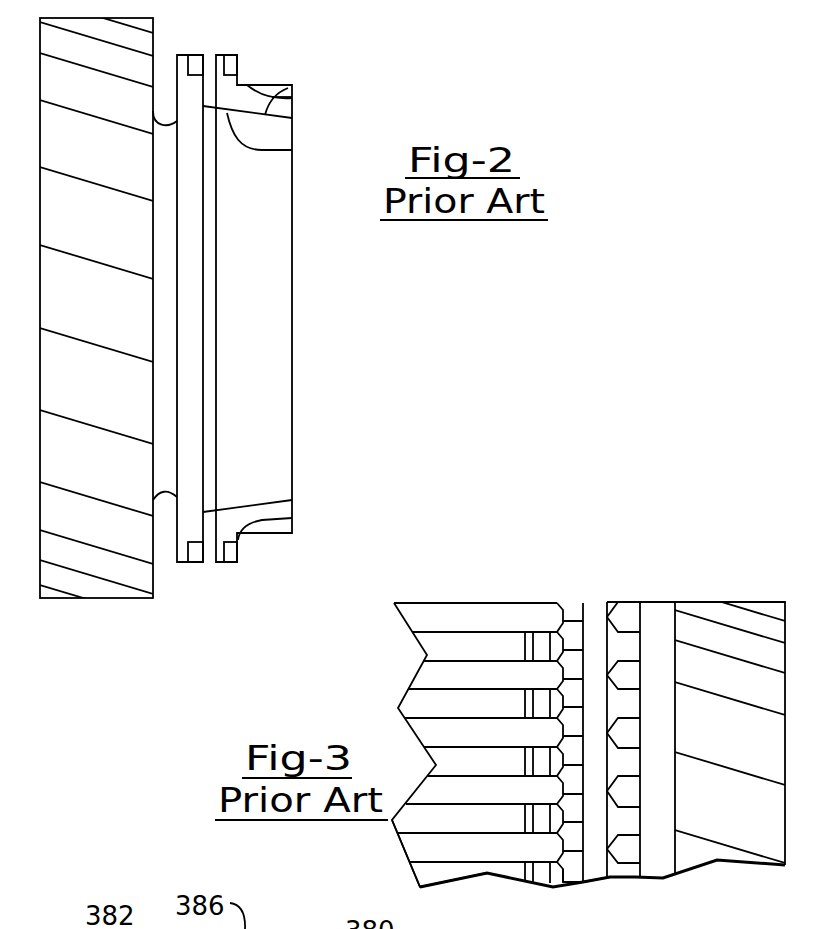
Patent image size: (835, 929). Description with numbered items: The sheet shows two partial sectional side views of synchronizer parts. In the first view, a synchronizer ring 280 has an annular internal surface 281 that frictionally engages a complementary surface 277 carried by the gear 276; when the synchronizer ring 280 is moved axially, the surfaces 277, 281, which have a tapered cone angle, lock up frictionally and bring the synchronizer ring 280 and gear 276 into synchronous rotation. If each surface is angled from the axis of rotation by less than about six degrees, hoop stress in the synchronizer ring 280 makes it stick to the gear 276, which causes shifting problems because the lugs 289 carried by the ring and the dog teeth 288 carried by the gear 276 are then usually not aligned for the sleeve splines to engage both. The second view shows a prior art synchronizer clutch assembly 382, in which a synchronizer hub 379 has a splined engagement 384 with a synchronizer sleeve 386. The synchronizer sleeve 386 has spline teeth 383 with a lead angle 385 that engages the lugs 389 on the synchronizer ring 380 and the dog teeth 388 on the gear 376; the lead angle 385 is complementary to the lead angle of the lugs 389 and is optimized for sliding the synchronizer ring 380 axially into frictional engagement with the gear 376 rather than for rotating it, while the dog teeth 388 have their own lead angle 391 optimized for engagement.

In FIG. 2, the gear 276 is at (89, 563).
In FIG. 2, the complementary surface 277 is at (293, 85).
In FIG. 2, the synchronizer ring 280 is at (272, 512).
In FIG. 2, the annular internal surface 281 is at (292, 150).
In FIG. 2, the dog teeth 288 is at (183, 552).
In FIG. 2, the lugs 289 is at (230, 552).
In FIG. 3, the gear 376 is at (747, 617).
In FIG. 3, the synchronizer hub 379 is at (438, 643).
In FIG. 3, the synchronizer ring 380 is at (555, 878).
In FIG. 3, the synchronizer clutch assembly 382 is at (522, 580).
In FIG. 3, the spline teeth 383 is at (480, 617).
In FIG. 3, the splined engagement 384 is at (445, 688).
In FIG. 3, the lead angle 385 is at (578, 605).
In FIG. 3, the synchronizer sleeve 386 is at (433, 867).
In FIG. 3, the dog teeth 388 is at (630, 615).
In FIG. 3, the lugs 389 is at (573, 867).
In FIG. 3, the lead angle 391 is at (617, 879).